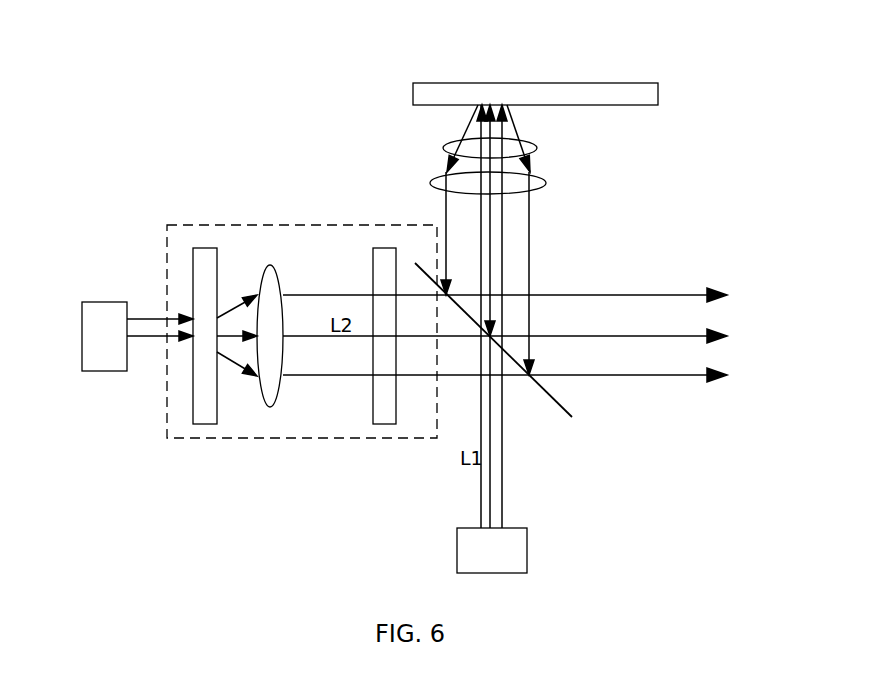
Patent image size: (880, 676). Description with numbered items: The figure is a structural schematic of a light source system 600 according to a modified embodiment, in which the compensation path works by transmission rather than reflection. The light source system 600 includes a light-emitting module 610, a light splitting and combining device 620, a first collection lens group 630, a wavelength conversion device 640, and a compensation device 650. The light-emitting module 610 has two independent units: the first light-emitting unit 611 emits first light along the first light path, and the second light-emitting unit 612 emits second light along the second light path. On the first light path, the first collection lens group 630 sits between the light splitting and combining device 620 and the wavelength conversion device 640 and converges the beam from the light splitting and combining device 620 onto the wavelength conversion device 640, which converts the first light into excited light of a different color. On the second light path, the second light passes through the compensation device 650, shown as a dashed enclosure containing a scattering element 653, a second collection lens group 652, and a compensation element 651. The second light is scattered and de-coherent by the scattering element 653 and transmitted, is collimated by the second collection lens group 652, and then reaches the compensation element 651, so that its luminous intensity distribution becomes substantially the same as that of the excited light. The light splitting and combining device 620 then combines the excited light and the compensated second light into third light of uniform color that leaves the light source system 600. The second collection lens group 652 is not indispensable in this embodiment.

The light source system 600 is at (290, 48).
The light-emitting module 610 is at (220, 548).
The first light-emitting unit 611 is at (457, 549).
The second light-emitting unit 612 is at (124, 371).
The light splitting and combining device 620 is at (555, 402).
The first collection lens group 630 is at (537, 151).
The wavelength conversion device 640 is at (613, 83).
The compensation device 650 is at (168, 265).
The compensation element 651 is at (385, 248).
The second collection lens group 652 is at (270, 265).
The scattering element 653 is at (205, 248).